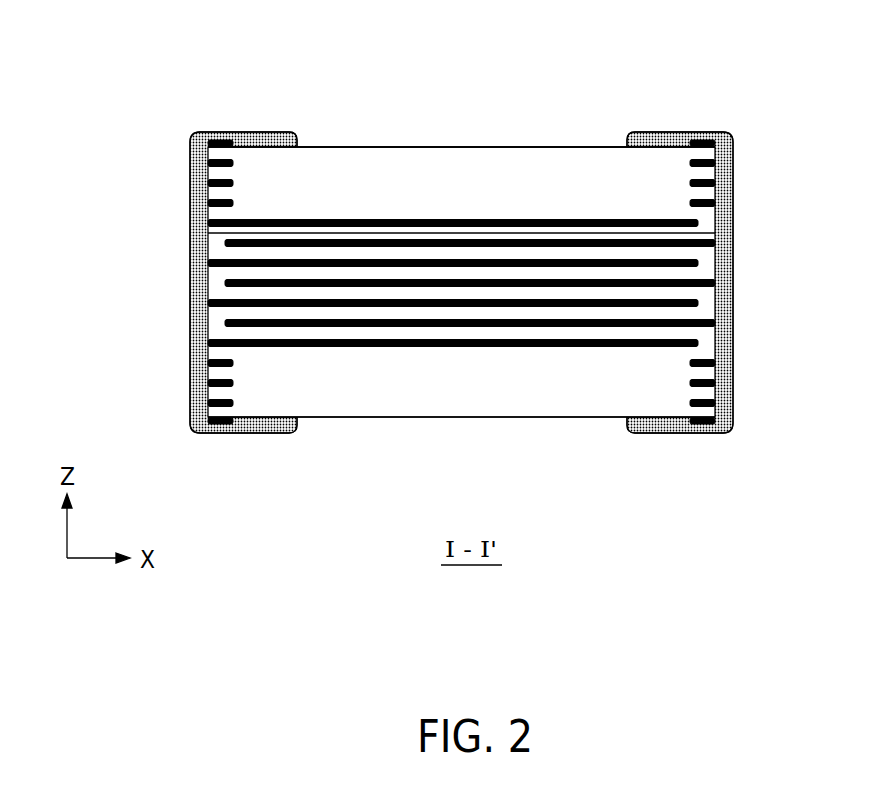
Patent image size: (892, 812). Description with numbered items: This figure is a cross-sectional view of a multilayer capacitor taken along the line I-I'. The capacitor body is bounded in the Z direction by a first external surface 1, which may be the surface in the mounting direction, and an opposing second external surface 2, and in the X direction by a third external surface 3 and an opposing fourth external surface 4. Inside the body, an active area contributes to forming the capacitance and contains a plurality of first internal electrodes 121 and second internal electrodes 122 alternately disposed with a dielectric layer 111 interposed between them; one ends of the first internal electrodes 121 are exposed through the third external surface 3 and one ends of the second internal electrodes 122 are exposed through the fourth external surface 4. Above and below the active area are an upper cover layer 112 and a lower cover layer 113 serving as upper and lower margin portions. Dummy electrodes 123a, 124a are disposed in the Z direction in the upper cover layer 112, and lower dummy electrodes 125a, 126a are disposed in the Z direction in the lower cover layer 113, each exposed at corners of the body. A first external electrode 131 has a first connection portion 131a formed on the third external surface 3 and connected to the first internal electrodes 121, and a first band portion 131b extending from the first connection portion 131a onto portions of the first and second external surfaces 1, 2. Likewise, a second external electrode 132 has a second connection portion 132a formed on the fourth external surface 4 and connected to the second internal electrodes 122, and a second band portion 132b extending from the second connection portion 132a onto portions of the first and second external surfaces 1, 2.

The first external surface 1 is at (411, 284).
The second external surface 2 is at (363, 146).
The third external surface 3 is at (173, 234).
The fourth external surface 4 is at (752, 236).
The dielectric layer 111 is at (218, 282).
The upper cover layer 112 is at (458, 160).
The lower cover layer 113 is at (465, 406).
The first internal electrode 121 is at (203, 228).
The second internal electrode 122 is at (711, 245).
The dummy electrode 123a is at (216, 131).
The dummy electrode 124a is at (698, 131).
The lower dummy electrode 125a is at (221, 409).
The lower dummy electrode 126a is at (690, 402).
The first external electrode 131 is at (173, 234).
The first connection portion 131a is at (193, 368).
The first band portion 131b is at (270, 131).
The second external electrode 132 is at (752, 236).
The second connection portion 132a is at (718, 367).
The second band portion 132b is at (641, 131).